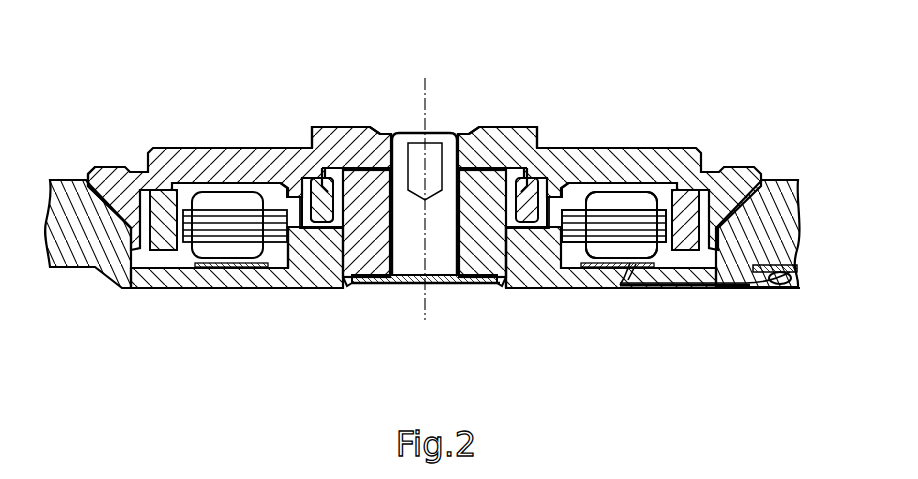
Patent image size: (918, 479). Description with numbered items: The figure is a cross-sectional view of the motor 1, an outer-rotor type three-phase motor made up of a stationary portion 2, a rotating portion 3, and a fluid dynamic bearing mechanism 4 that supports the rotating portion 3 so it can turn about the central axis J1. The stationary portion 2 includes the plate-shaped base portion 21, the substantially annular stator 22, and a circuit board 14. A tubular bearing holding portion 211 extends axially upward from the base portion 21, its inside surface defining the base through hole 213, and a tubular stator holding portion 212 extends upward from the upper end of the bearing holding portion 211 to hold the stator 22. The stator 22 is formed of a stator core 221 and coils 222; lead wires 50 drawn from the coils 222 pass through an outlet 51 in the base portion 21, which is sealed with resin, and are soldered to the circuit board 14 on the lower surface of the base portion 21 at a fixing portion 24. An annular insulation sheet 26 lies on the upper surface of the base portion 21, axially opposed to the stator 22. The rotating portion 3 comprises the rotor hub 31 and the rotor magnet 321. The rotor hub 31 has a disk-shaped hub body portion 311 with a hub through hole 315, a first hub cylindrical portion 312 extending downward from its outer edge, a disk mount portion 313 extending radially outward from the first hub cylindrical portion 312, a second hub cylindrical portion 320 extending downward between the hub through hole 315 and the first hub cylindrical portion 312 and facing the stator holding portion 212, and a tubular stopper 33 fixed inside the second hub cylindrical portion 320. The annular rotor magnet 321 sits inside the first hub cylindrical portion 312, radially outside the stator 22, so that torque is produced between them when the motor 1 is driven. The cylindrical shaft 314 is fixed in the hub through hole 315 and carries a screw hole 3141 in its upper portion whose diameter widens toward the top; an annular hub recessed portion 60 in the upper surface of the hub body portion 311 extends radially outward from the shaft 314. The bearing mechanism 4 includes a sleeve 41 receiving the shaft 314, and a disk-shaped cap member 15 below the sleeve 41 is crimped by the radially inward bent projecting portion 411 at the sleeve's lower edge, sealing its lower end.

The motor 1 is at (77, 75).
The stationary portion 2 is at (81, 288).
The rotating portion 3 is at (185, 66).
The bearing mechanism 4 is at (332, 160).
The circuit board 14 is at (773, 258).
The cap member 15 is at (370, 291).
The base portion 21 is at (241, 292).
The stator 22 is at (577, 206).
The fixing portion 24 is at (790, 289).
The insulation sheet 26 is at (597, 290).
The rotor hub 31 is at (204, 130).
The stopper 33 is at (318, 177).
The sleeve 41 is at (472, 288).
The lead wire 50 is at (742, 289).
The outlet 51 is at (623, 289).
The hub recessed portion 60 is at (472, 129).
The bearing holding portion 211 is at (333, 291).
The stator holding portion 212 is at (297, 291).
The base through hole 213 is at (510, 289).
The stator core 221 is at (640, 225).
The coils 222 is at (610, 200).
The hub body portion 311 is at (163, 165).
The first hub cylindrical portion 312 is at (708, 165).
The disk mount portion 313 is at (110, 165).
The shaft 314 is at (450, 132).
The hub through hole 315 is at (343, 128).
The second hub cylindrical portion 320 is at (297, 195).
The rotor magnet 321 is at (684, 210).
The projecting portion 411 is at (348, 291).
The screw hole 3141 is at (408, 140).
The central axis J1 is at (424, 97).